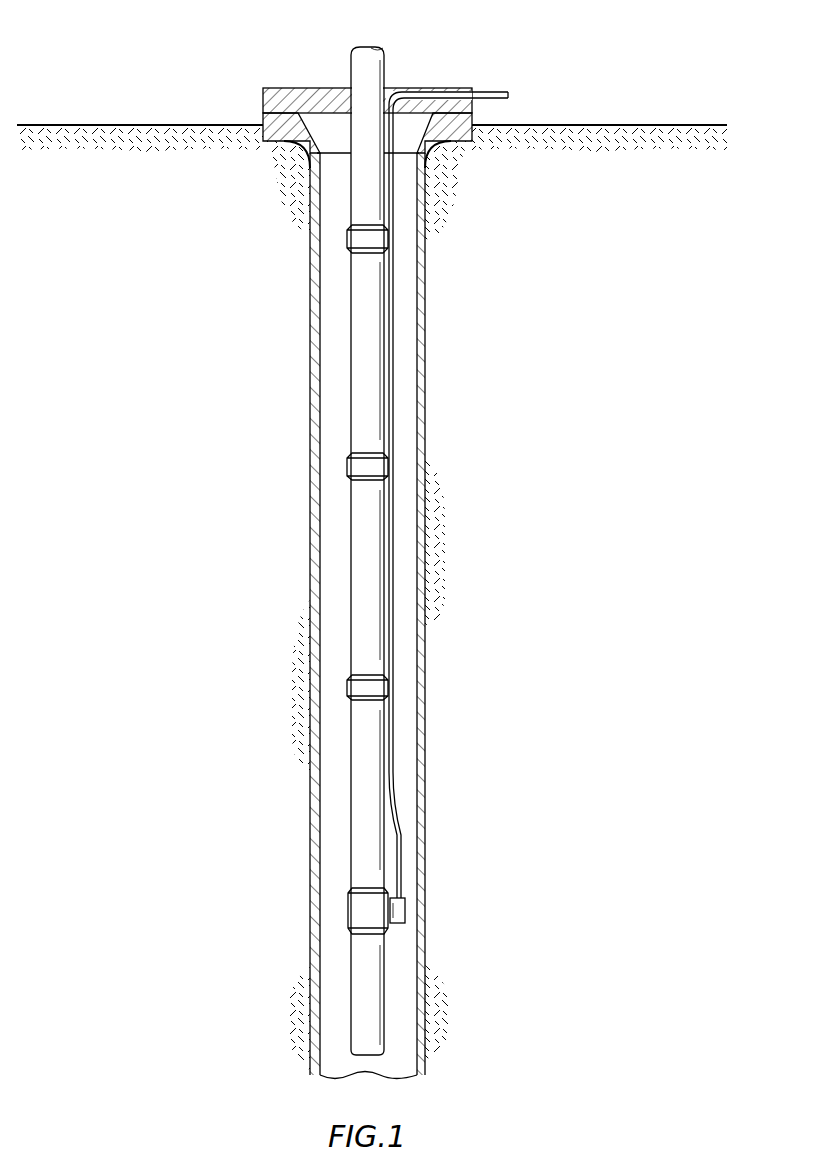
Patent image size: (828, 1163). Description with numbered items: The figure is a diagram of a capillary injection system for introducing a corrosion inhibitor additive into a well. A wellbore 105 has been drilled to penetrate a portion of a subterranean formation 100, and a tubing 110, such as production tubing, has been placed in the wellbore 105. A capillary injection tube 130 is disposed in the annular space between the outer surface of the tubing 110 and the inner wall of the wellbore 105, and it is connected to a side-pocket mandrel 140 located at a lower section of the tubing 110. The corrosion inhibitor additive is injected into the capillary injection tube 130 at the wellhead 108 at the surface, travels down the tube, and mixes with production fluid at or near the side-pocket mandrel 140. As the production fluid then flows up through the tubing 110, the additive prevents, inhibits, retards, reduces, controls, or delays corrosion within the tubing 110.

The subterranean formation 100 is at (535, 163).
The wellbore 105 is at (310, 295).
The wellhead 108 is at (350, 88).
The tubing 110 is at (370, 508).
The capillary injection tube 130 is at (389, 192).
The side-pocket mandrel 140 is at (405, 908).